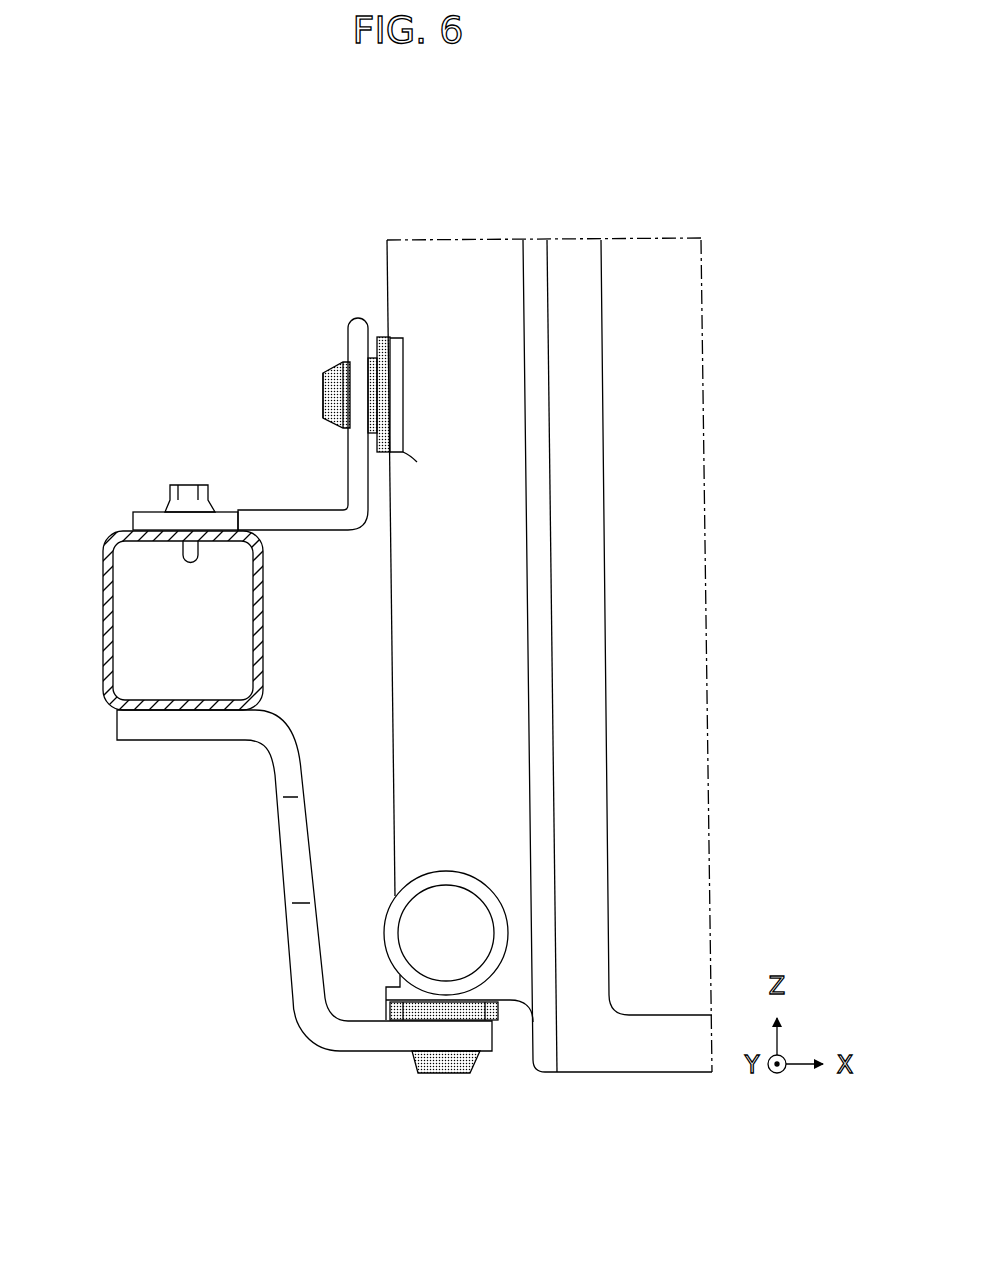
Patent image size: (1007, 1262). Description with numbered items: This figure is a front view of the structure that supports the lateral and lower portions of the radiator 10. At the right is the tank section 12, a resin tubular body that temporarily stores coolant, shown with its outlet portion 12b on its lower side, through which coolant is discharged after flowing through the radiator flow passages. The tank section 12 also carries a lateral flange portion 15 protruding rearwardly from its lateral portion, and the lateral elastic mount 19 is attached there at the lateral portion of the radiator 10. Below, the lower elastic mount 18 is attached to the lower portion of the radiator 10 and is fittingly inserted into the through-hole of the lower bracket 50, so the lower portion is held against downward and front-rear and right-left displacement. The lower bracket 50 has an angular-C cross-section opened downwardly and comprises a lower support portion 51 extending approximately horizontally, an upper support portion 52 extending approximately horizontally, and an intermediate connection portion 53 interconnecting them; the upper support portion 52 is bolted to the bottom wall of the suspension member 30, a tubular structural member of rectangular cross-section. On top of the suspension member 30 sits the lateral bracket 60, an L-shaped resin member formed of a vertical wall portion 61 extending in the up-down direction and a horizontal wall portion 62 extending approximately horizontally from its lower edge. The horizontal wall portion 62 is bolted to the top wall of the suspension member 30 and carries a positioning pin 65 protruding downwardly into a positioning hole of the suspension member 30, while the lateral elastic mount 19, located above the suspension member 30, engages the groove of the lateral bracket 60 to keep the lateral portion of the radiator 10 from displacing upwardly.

The radiator 10 is at (690, 208).
The tank section 12 is at (489, 268).
The outlet portion 12b is at (470, 938).
The lateral flange portion 15 is at (403, 338).
The lower elastic mount 18 is at (443, 1075).
The lateral elastic mount 19 is at (323, 390).
The suspension member 30 is at (103, 642).
The lower bracket 50 is at (304, 919).
The lower support portion 51 is at (380, 1043).
The upper support portion 52 is at (168, 730).
The intermediate connection portion 53 is at (290, 860).
The lateral bracket 60 is at (357, 532).
The vertical wall portion 61 is at (357, 338).
The horizontal wall portion 62 is at (267, 508).
The positioning pin 65 is at (182, 550).